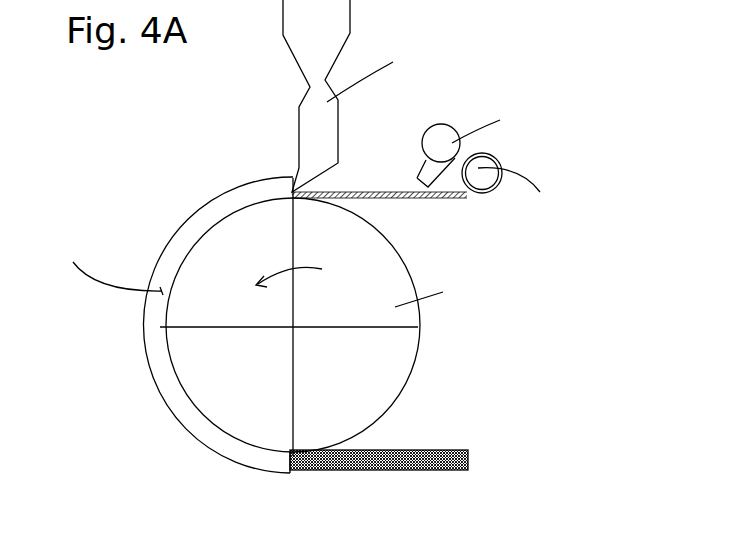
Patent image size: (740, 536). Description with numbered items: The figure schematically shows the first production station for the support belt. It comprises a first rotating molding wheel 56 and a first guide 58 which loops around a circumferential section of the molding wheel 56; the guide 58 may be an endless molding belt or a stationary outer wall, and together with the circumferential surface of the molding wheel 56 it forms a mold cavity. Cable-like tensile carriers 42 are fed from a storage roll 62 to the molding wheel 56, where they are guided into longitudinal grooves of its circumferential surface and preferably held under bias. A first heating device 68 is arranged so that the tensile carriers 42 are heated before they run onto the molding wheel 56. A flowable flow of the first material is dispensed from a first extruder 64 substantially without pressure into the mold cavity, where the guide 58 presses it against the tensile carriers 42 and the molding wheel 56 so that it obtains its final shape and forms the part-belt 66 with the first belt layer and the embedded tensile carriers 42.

The tensile carriers 42 is at (403, 195).
The first molding wheel 56 is at (385, 365).
The first guide 58 is at (172, 405).
The storage roll 62 is at (482, 183).
The first extruder 64 is at (335, 42).
The part-belt 66 is at (447, 460).
The first heating device 68 is at (437, 142).